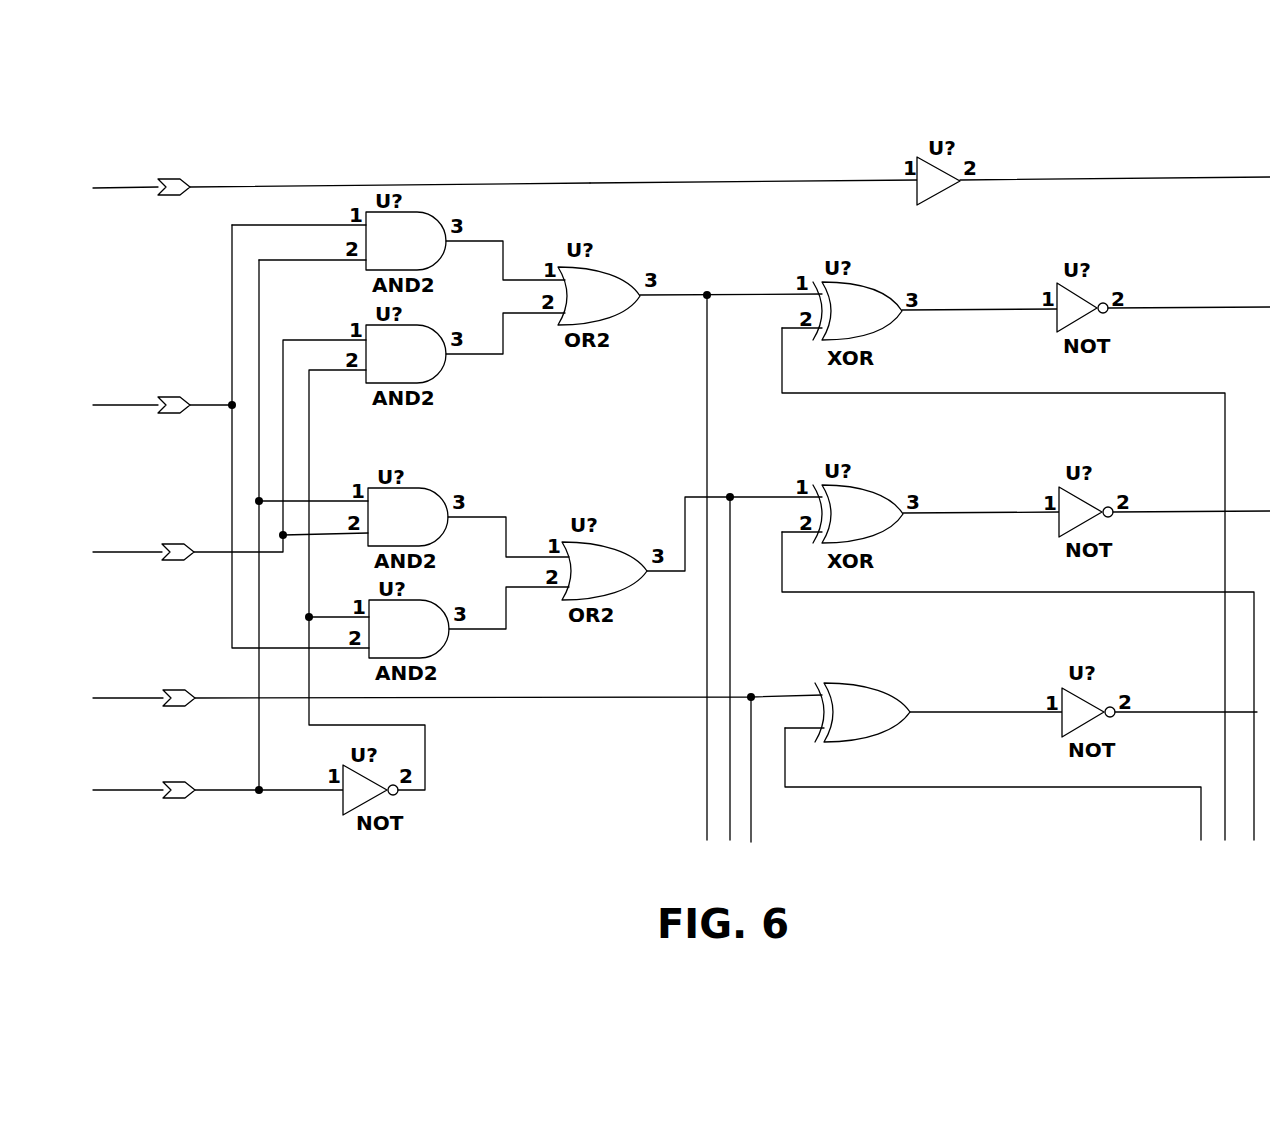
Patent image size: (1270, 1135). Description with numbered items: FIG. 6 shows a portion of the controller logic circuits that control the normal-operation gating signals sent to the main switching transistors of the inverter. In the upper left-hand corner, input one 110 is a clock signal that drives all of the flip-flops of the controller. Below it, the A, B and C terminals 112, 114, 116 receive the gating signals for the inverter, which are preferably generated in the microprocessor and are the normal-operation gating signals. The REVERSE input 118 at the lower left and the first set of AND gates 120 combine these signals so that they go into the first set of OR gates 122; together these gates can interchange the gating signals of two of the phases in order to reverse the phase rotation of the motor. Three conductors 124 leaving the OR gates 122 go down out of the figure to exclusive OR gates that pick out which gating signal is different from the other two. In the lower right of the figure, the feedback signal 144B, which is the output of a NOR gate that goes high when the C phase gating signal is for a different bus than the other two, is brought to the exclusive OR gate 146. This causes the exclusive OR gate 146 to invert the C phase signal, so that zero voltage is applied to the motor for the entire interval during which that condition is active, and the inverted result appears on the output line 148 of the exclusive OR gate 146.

The input 1 110 is at (123, 188).
The A terminal 112 is at (125, 403).
The B terminal 114 is at (134, 552).
The C terminal 116 is at (135, 698).
The REVERSE input 118 is at (137, 790).
The first set of AND gates 120 is at (414, 170).
The first set of OR gates 122 is at (583, 170).
The three conductors 124 is at (706, 822).
The exclusive OR gate 146 is at (888, 739).
The XOR output line 148 is at (972, 712).
The output signal of NOR gate 144a 144B is at (1116, 787).